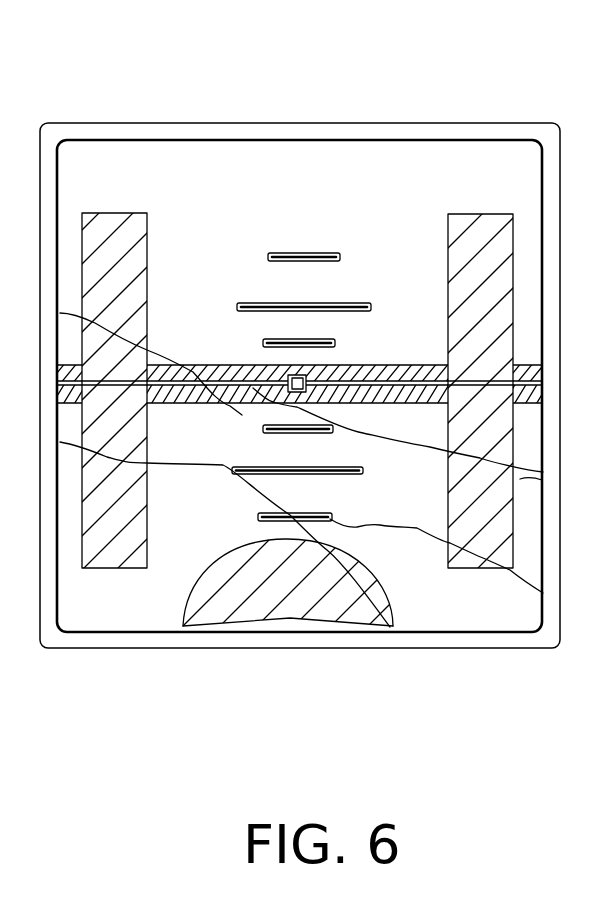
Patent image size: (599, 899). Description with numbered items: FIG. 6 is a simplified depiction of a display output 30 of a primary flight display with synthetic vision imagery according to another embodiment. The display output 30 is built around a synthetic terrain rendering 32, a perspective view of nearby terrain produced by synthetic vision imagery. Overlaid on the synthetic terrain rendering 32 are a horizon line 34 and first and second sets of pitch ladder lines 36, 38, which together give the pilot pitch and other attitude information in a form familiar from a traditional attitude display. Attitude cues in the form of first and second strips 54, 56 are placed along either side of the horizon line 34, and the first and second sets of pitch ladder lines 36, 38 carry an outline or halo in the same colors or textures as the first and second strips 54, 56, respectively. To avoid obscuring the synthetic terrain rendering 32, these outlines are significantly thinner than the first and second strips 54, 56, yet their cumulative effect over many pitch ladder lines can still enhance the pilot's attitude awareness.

The display output 30 is at (177, 90).
The synthetic terrain rendering 32 is at (438, 610).
The horizon line 34 is at (383, 367).
The first set of pitch ladder lines 36 is at (367, 307).
The second set of pitch ladder lines 38 is at (391, 597).
The first strip 54 is at (221, 367).
The second strip 56 is at (190, 403).